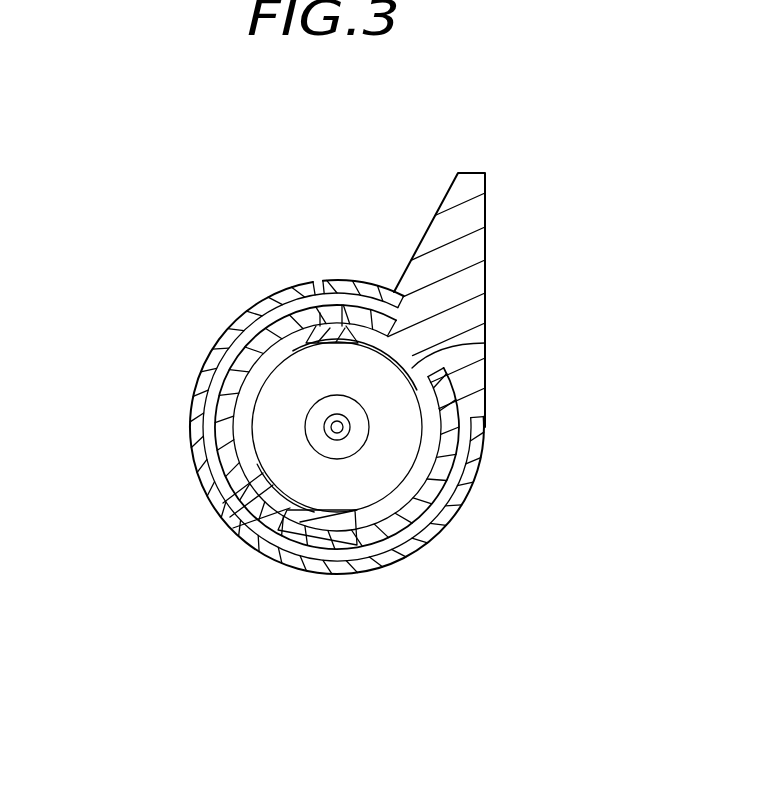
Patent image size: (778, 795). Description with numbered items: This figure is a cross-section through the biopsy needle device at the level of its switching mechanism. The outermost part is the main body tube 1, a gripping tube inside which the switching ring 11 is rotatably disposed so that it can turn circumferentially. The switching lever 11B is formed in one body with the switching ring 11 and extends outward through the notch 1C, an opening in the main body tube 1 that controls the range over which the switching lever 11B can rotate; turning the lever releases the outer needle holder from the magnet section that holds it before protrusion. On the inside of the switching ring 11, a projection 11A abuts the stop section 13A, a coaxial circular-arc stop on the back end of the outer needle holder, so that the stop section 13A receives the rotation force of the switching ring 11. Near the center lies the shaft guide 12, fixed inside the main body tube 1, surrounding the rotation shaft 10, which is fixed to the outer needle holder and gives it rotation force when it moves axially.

The main body tube 1 is at (220, 343).
The notch 1C is at (323, 283).
The rotation shaft 10 is at (325, 445).
The switching ring 11 is at (447, 490).
The projection 11A is at (485, 342).
The switching lever 11B is at (480, 250).
The shaft guide 12 is at (393, 415).
The stop section 13A is at (335, 332).